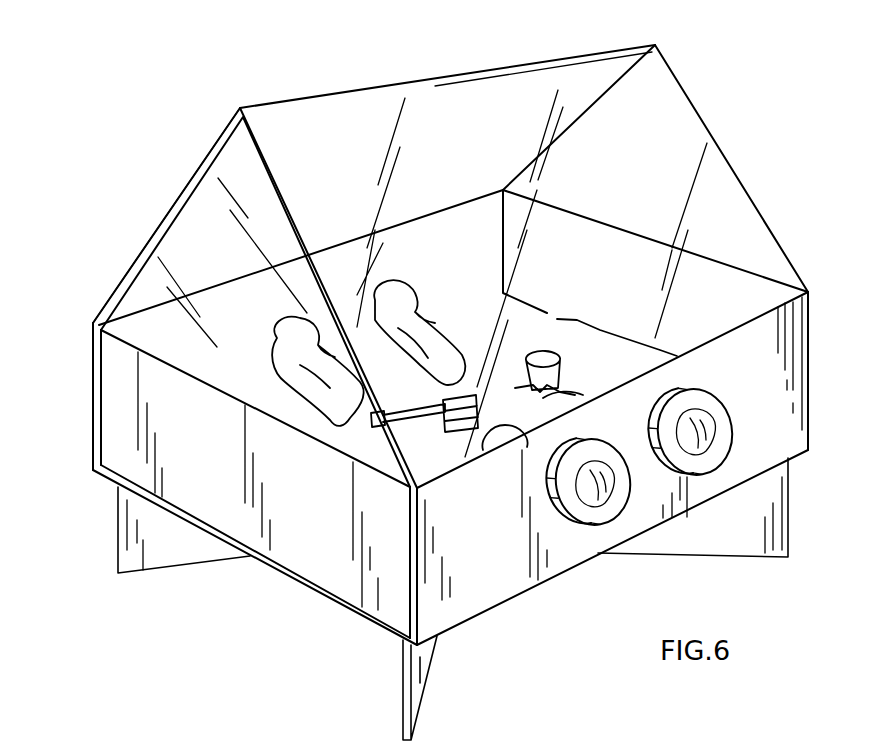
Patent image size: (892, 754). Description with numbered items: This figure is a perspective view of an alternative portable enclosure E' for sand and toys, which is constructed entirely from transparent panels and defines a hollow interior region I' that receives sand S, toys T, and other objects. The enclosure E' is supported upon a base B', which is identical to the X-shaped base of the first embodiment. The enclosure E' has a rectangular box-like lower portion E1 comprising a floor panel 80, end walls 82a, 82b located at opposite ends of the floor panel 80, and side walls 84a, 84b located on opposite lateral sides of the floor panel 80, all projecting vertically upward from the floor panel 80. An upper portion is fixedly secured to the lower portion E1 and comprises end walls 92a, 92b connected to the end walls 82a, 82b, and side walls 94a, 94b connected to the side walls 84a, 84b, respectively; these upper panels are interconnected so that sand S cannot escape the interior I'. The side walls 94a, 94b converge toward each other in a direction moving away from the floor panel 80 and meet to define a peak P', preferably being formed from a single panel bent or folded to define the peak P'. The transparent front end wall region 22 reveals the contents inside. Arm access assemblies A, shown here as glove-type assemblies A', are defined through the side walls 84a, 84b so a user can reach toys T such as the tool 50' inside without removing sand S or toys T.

The side wall 94b is at (296, 110).
The peak P' is at (447, 56).
The interior region I' is at (622, 189).
The portable enclosure E' is at (731, 168).
The end wall 92b is at (801, 282).
The side wall 94a is at (190, 178).
The transparent front panel 22 is at (195, 220).
The end wall 92a is at (155, 287).
The side wall 84a is at (470, 218).
The end wall 82b is at (714, 280).
The arm access assembly A is at (398, 341).
The tool 50' is at (393, 381).
The toys T is at (533, 350).
The sand S is at (578, 320).
The lower portion E1 is at (85, 405).
The base B' is at (410, 515).
The end wall 82a is at (242, 522).
The floor panel 80 is at (303, 582).
The side wall 84b is at (487, 578).
The arm access assembly A' is at (694, 504).